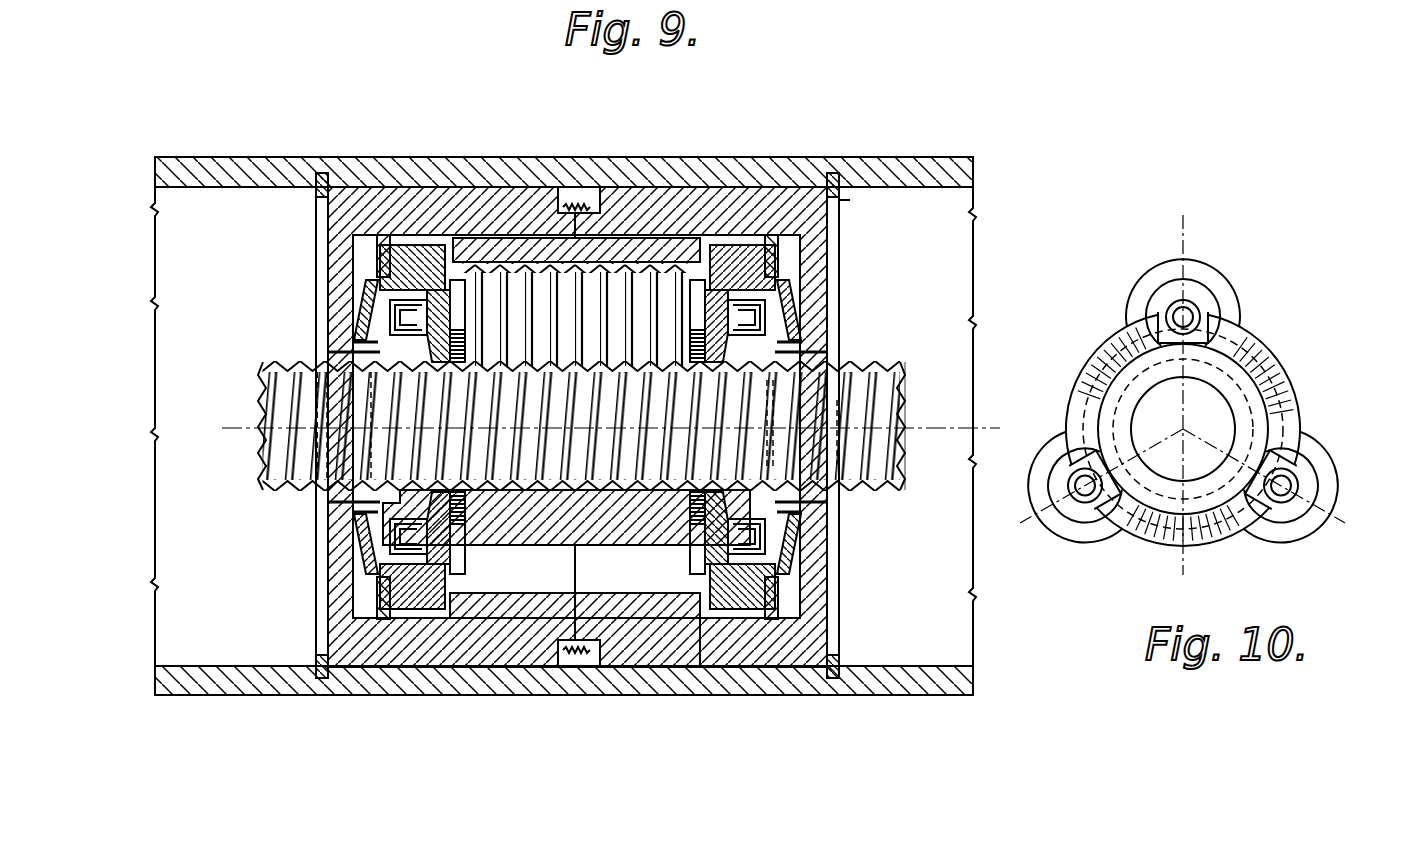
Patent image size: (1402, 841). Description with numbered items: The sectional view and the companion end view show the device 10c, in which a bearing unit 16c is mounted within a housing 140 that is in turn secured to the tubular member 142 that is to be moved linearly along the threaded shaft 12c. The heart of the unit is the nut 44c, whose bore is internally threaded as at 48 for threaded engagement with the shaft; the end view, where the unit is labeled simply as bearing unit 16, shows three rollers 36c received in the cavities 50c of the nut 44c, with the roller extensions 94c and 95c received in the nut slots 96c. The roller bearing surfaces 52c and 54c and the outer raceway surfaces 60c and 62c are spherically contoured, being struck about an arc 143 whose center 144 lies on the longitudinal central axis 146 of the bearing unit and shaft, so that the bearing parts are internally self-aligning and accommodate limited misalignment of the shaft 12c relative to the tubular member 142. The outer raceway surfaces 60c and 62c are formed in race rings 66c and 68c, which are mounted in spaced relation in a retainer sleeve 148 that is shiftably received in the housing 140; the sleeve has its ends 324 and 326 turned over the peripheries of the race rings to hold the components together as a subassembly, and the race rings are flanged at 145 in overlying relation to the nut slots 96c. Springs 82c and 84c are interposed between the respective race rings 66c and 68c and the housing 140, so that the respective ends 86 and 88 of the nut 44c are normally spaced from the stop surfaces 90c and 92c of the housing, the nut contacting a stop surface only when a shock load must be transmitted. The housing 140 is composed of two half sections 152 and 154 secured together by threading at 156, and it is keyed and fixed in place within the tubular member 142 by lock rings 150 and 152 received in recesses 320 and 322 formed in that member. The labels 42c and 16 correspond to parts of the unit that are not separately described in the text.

In FIG. 9, the device 10c is at (882, 182).
In FIG. 9, the shaft 12c is at (882, 365).
In FIG. 9, the bearing unit 16c is at (728, 230).
In FIG. 9, the rollers 36c is at (613, 264).
In FIG. 10, the rollers 36c is at (1210, 272).
In FIG. 9, the ring 42c is at (385, 470).
In FIG. 9, the nut 44c is at (515, 545).
In FIG. 10, the nut 44c is at (1285, 371).
In FIG. 9, the roller bearing surface 52c is at (745, 265).
In FIG. 10, the roller bearing surface 52c is at (1307, 500).
In FIG. 9, the roller bearing surface 54c is at (440, 300).
In FIG. 9, the outer raceway surface 60c is at (720, 622).
In FIG. 9, the outer raceway surface 62c is at (428, 668).
In FIG. 9, the race ring 66c is at (712, 248).
In FIG. 9, the race ring 68c is at (432, 272).
In FIG. 9, the spring 82c is at (790, 315).
In FIG. 9, the spring 84c is at (355, 312).
In FIG. 9, the end of nut 86 is at (790, 520).
In FIG. 9, the end of nut 88 is at (350, 530).
In FIG. 9, the stop surface 90c is at (823, 512).
In FIG. 9, the stop surface 92c is at (385, 362).
In FIG. 9, the roller extension 94c is at (805, 265).
In FIG. 9, the roller extension 95c is at (400, 320).
In FIG. 9, the nut slots 96c is at (768, 340).
In FIG. 10, the nut slots 96c is at (1297, 468).
In FIG. 9, the housing 140 is at (398, 192).
In FIG. 9, the tubular member 142 is at (343, 160).
In FIG. 9, the arc 143 is at (690, 590).
In FIG. 9, the center 144 is at (608, 470).
In FIG. 10, the center 144 is at (1186, 420).
In FIG. 9, the flange 145 is at (372, 550).
In FIG. 9, the longitudinal central axis 146 is at (932, 428).
In FIG. 9, the retainer sleeve 148 is at (583, 205).
In FIG. 9, the lock ring 150 is at (842, 208).
In FIG. 9, the half section 152 is at (318, 210).
In FIG. 9, the half section 154 is at (468, 600).
In FIG. 9, the threading 156 is at (575, 668).
In FIG. 9, the recess 320 is at (838, 162).
In FIG. 9, the recess 322 is at (300, 172).
In FIG. 9, the end of sleeve 324 is at (828, 168).
In FIG. 9, the end of sleeve 326 is at (368, 243).
In FIG. 10, the ring 16 is at (1118, 400).
In FIG. 10, the internal threading 48 is at (1196, 444).
In FIG. 10, the cavities 50c is at (1245, 335).